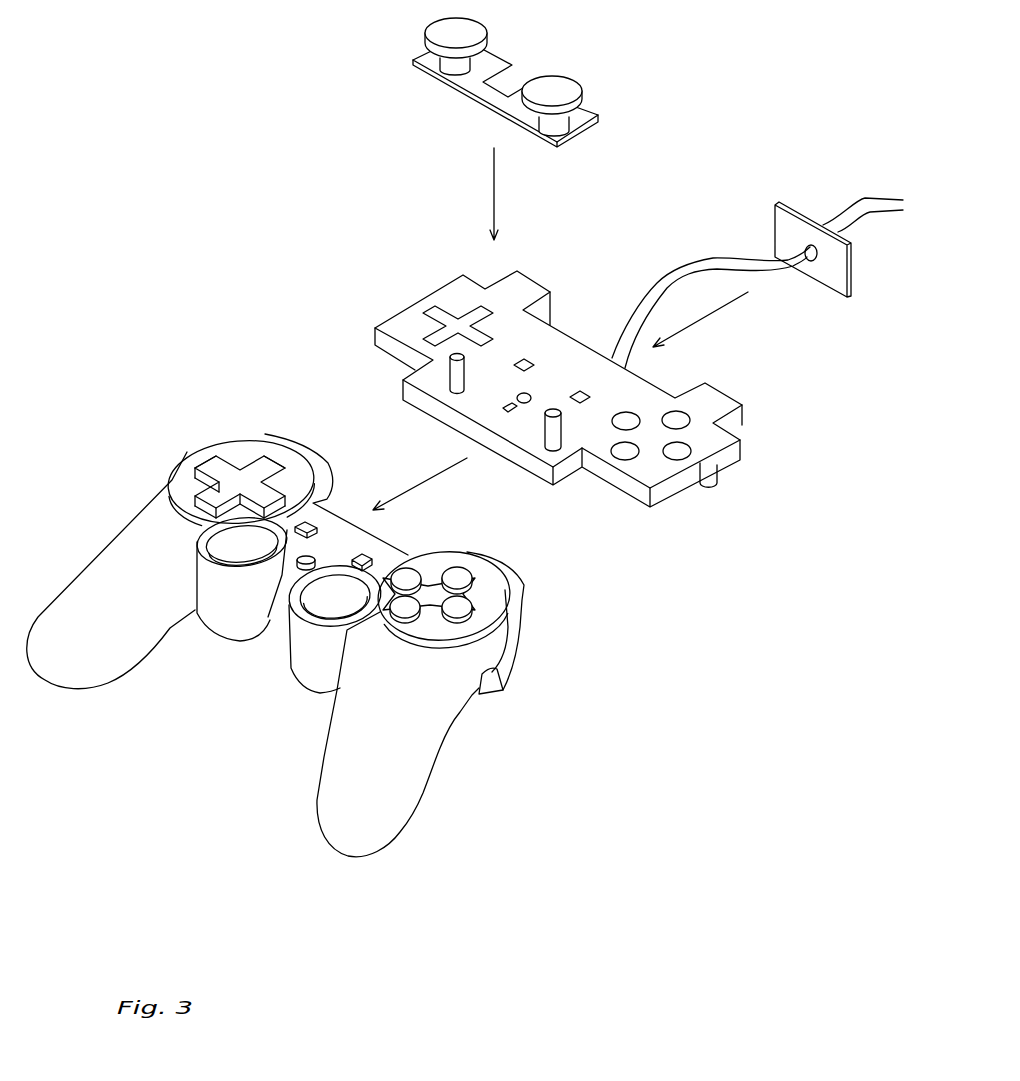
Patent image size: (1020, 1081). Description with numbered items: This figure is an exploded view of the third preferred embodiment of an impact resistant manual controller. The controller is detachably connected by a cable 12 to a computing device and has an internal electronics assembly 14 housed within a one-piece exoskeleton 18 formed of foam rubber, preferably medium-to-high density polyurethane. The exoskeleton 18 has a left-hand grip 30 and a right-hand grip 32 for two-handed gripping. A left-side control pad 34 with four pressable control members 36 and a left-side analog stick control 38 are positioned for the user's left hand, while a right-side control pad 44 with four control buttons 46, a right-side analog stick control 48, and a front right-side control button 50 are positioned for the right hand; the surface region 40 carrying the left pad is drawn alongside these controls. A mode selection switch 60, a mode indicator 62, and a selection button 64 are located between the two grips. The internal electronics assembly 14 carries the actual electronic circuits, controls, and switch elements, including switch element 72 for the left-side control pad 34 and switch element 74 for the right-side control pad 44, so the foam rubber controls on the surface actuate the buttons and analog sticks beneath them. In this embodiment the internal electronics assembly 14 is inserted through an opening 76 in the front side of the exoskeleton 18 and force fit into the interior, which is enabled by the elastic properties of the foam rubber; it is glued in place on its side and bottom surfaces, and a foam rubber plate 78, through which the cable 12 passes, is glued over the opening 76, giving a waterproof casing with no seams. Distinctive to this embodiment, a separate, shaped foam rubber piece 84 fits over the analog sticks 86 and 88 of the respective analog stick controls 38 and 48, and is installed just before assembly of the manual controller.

The cable 12 is at (745, 272).
The internal electronics assembly 14 is at (573, 375).
The exoskeleton 18 is at (303, 625).
The left-hand grip 30 is at (88, 583).
The right-hand grip 32 is at (427, 757).
The left-side control pad 34 is at (232, 447).
The pressable control members 36 is at (218, 458).
The left-side analog stick control 38 is at (492, 92).
The left button platform 40 is at (320, 447).
The right-side control pad 44 is at (490, 590).
The control buttons 46 is at (455, 576).
The right-side analog stick control 48 is at (548, 125).
The front right-side control button 50 is at (515, 565).
The mode selection switch 60 is at (315, 557).
The mode indicator 62 is at (272, 632).
The selection button 64 is at (310, 525).
The switch element 72 is at (441, 295).
The switch element 74 is at (711, 427).
The opening 76 is at (398, 552).
The foam rubber plate 78 is at (790, 212).
The shaped foam rubber piece 84 is at (467, 97).
The analog stick 86 is at (450, 378).
The analog stick 88 is at (552, 440).